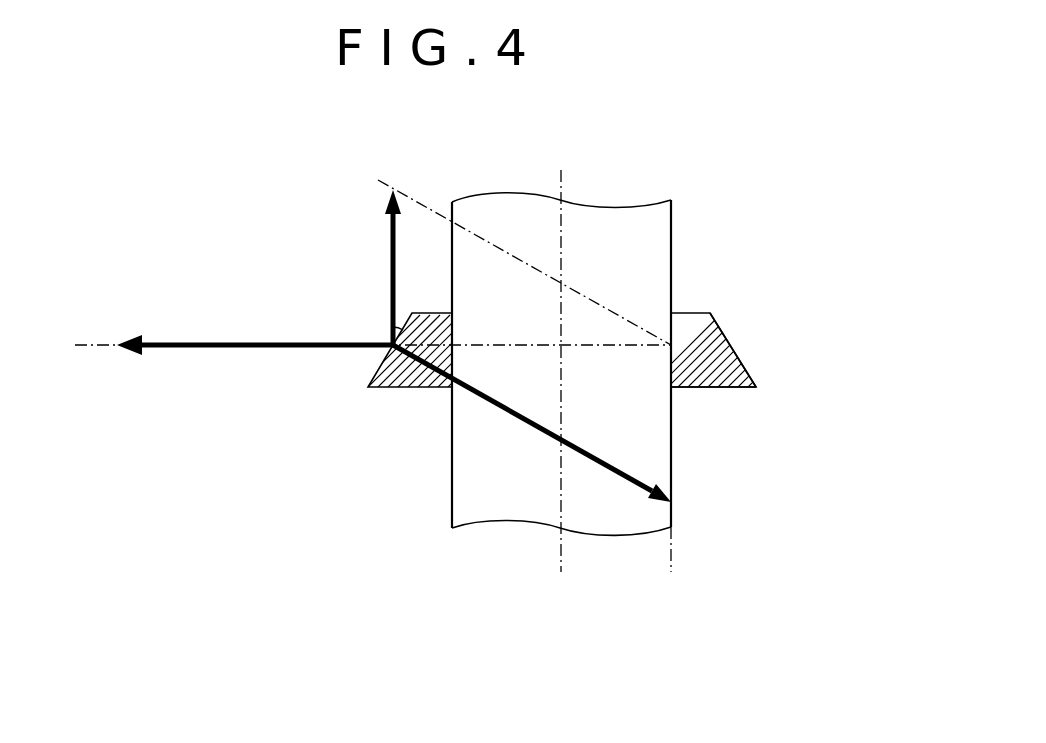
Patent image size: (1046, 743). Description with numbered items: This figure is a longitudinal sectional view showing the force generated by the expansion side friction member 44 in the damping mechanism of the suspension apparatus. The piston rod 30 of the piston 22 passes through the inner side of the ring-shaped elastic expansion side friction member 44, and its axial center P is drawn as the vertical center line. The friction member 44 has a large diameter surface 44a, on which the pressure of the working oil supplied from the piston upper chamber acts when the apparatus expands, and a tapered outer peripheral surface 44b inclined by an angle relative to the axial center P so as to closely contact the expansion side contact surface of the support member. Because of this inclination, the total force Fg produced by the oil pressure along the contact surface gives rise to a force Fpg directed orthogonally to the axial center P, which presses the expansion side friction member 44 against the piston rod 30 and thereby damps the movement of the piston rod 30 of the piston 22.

The piston rod 30 is at (656, 222).
The piston 22 is at (678, 269).
The expansion side friction member 44 is at (752, 365).
The large diameter surface 44a is at (710, 388).
The outer peripheral surface 44b is at (736, 339).
The force Fpg is at (250, 340).
The total force Fg is at (392, 268).
The axial center p is at (562, 557).